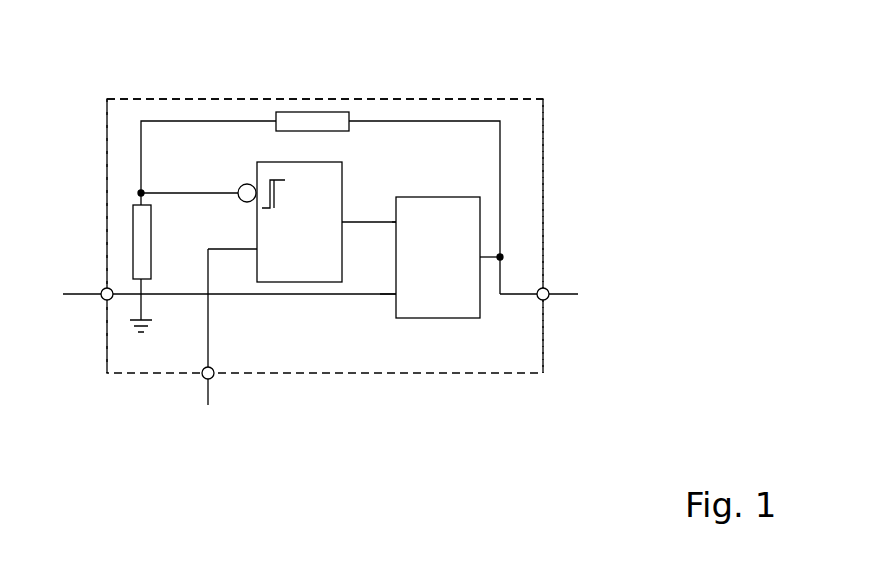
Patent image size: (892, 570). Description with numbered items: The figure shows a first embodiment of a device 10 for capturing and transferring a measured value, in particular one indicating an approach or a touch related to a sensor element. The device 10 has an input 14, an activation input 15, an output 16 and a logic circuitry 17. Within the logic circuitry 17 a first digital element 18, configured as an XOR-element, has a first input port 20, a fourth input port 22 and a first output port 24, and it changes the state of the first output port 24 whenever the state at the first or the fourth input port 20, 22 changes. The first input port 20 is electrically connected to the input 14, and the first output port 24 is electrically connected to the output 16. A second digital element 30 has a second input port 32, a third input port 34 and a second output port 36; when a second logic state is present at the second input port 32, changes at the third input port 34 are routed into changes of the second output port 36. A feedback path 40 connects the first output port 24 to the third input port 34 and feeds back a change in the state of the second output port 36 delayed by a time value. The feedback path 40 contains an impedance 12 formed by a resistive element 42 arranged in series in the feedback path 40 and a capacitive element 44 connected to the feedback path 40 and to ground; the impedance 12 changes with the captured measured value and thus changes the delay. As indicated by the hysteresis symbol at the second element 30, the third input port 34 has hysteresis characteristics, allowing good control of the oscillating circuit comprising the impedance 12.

The device 10 is at (517, 97).
The impedance 12 is at (328, 92).
The input 14 is at (104, 298).
The activation input 15 is at (205, 378).
The output 16 is at (547, 300).
The logic circuitry 17 is at (538, 133).
The first digital element 18 is at (440, 318).
The first input port 20 is at (395, 296).
The fourth input port 22 is at (395, 224).
The first output port 24 is at (488, 260).
The second digital element 30 is at (289, 283).
The second input port 32 is at (256, 250).
The third input port 34 is at (240, 201).
The second output port 36 is at (345, 223).
The feedback path 40 is at (500, 193).
The resistive element 42 is at (333, 117).
The capacitive element 44 is at (133, 242).